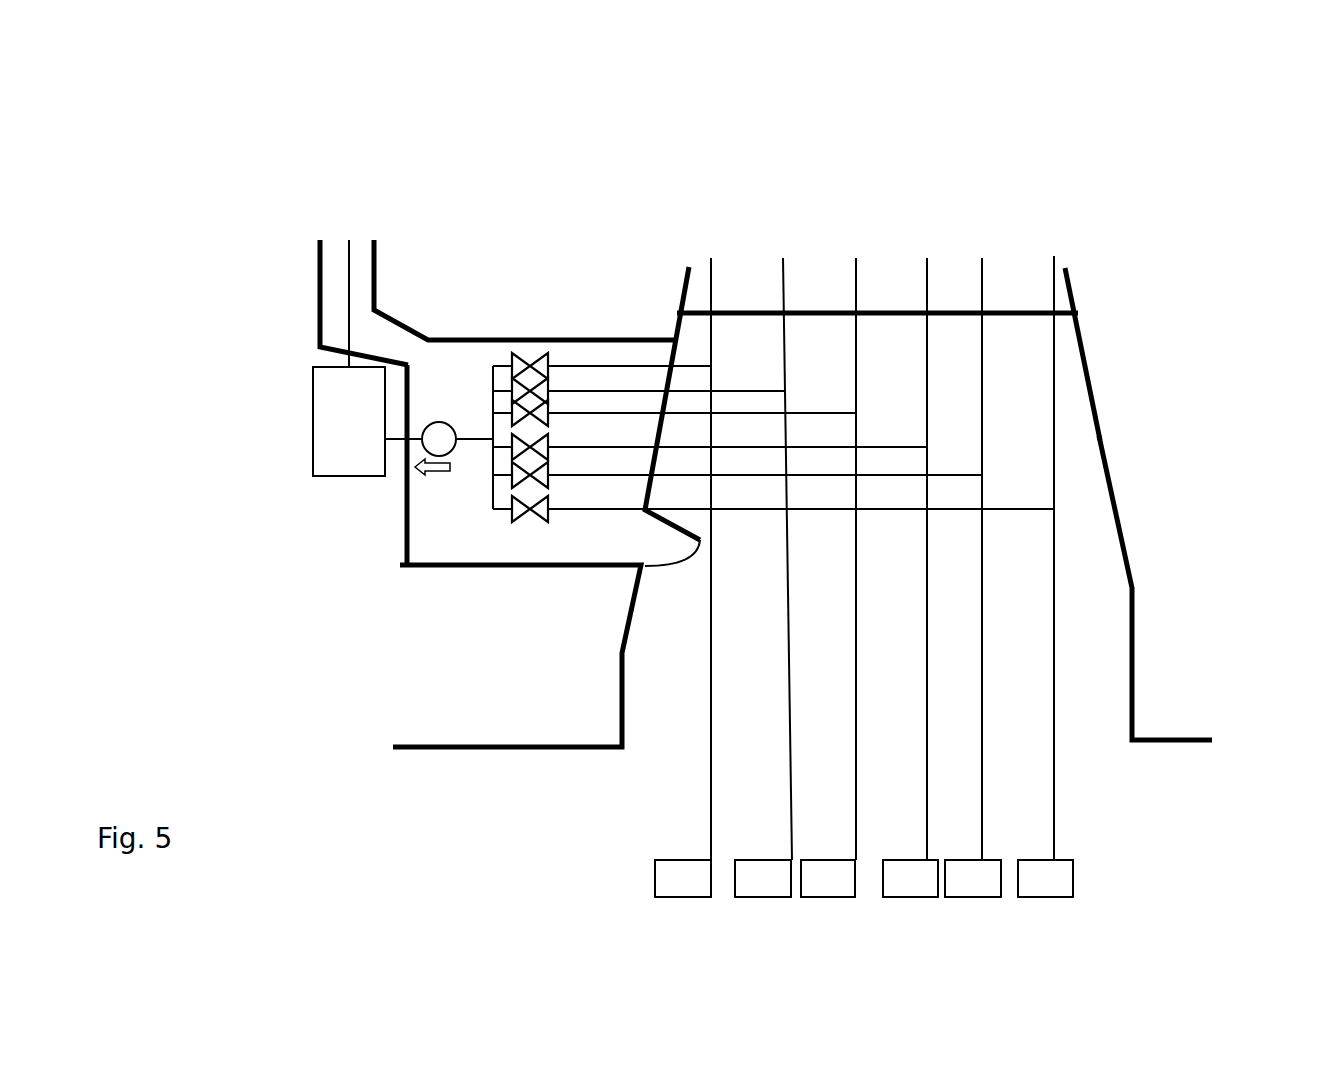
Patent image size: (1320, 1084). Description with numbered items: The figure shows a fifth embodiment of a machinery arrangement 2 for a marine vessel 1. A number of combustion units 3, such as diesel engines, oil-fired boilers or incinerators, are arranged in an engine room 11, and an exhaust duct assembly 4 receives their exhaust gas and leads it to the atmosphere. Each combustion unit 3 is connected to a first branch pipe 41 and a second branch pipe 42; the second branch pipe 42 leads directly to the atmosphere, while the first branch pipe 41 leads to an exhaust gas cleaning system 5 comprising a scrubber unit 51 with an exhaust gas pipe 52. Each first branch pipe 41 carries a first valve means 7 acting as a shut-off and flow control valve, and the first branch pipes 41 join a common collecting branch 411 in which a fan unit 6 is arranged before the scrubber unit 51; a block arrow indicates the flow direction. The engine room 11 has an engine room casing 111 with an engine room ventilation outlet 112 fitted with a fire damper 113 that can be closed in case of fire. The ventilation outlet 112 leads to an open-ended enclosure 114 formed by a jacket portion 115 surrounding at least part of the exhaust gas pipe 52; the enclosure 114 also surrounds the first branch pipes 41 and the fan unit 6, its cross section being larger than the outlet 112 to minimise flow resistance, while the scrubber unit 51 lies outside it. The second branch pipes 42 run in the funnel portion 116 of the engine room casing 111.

The marine vessel 1 is at (1026, 74).
The machinery arrangement 2 is at (1124, 399).
The combustion unit 3 is at (689, 882).
The exhaust duct assembly 4 is at (876, 477).
The exhaust gas cleaning system 5 is at (422, 364).
The fan unit 6 is at (441, 422).
The first valve means 7 is at (515, 353).
The engine room 11 is at (512, 872).
The first branch pipe 41 is at (577, 366).
The second branch pipe 42 is at (710, 690).
The scrubber unit 51 is at (323, 438).
The exhaust gas pipe 52 is at (350, 252).
The engine room casing 111 is at (1124, 525).
The engine room ventilation outlet 112 is at (668, 578).
The fire damper 113 is at (697, 535).
The enclosure 114 is at (400, 521).
The jacket portion 115 is at (310, 276).
The funnel portion 116 is at (1024, 343).
The common collecting branch 411 is at (473, 438).